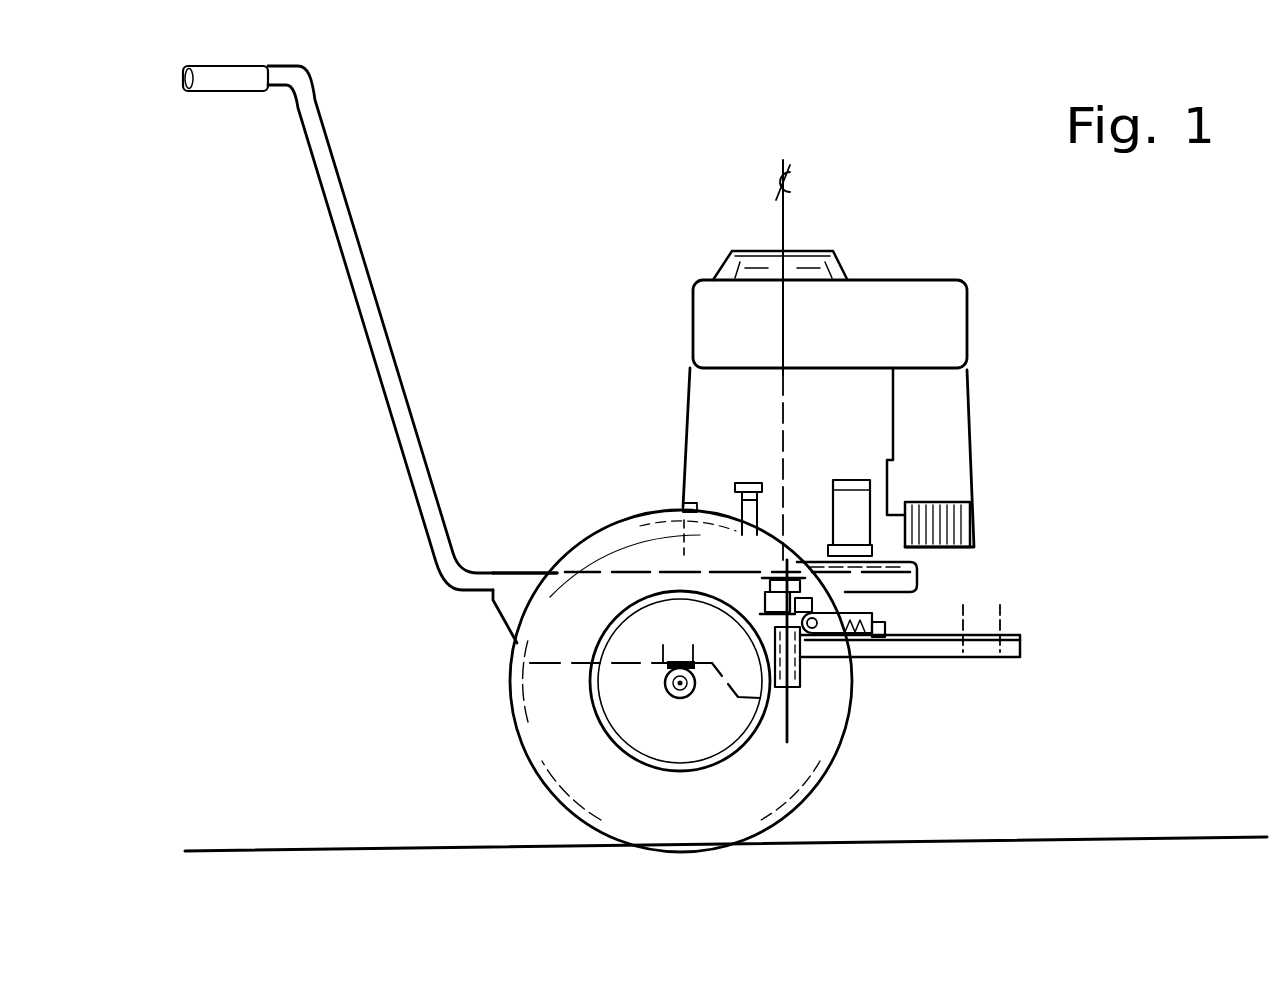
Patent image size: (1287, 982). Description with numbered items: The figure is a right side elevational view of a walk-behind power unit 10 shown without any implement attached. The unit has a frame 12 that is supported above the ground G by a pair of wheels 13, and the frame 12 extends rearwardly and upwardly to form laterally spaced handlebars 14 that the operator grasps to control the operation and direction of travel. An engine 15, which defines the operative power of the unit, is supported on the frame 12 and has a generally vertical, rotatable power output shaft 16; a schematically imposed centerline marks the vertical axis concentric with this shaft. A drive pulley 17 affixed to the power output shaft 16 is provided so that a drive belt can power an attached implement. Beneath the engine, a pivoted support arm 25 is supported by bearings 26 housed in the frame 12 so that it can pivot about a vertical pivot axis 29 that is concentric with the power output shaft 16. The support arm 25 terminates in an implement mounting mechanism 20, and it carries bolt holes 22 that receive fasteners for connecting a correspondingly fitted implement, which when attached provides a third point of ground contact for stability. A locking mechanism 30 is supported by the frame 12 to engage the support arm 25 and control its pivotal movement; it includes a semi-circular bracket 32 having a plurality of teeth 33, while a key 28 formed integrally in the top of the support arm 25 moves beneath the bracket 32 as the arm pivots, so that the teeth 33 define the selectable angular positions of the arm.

The walk-behind power unit 10 is at (1022, 277).
The frame 12 is at (495, 612).
The wheels 13 is at (510, 718).
The handlebars 14 is at (338, 238).
The engine 15 is at (693, 325).
The power output shaft 16 is at (770, 605).
The drive pulley 17 is at (773, 603).
The implement mounting mechanism 20 is at (1002, 557).
The bolt holes 22 is at (1000, 632).
The support arm 25 is at (985, 662).
The bearings 26 is at (803, 673).
The key 28 is at (880, 628).
The pivot axis 29 is at (792, 733).
The locking mechanism 30 is at (915, 603).
The semi-circular bracket 32 is at (905, 500).
The teeth 33 is at (858, 650).
The ground G is at (1245, 838).